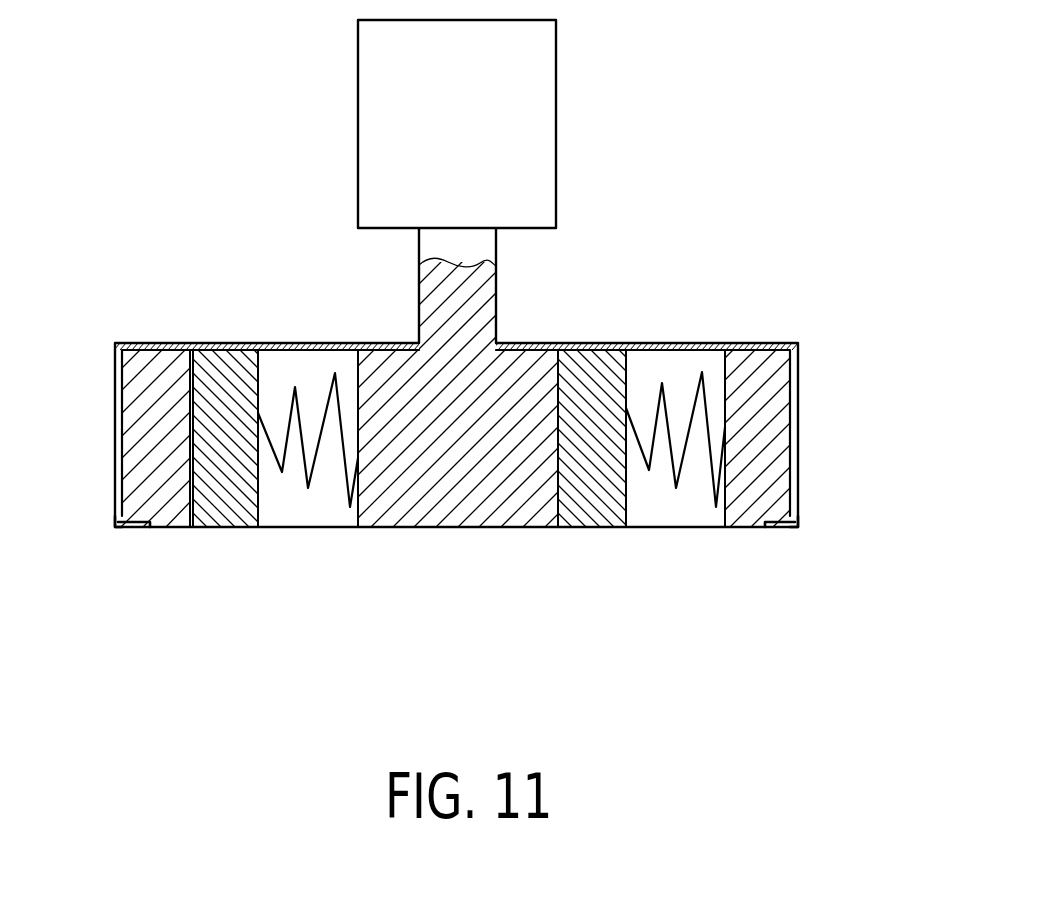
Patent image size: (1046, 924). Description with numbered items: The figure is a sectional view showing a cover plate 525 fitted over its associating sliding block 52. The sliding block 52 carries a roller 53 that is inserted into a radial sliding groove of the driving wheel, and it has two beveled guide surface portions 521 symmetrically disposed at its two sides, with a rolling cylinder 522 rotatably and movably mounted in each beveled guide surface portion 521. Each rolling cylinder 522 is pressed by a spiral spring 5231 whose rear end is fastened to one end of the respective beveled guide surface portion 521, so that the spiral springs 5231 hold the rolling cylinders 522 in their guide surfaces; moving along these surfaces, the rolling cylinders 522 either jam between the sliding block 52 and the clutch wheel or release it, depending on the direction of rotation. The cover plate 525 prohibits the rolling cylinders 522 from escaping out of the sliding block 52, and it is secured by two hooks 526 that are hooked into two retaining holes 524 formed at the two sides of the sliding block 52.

The roller 53 is at (523, 108).
The sliding block 52 is at (455, 490).
The beveled guide surface portion 521 is at (297, 498).
The rolling cylinder 522 is at (227, 490).
The spiral spring 5231 is at (337, 447).
The retaining hole 524 is at (128, 528).
The cover plate 525 is at (676, 343).
The hook 526 is at (145, 530).